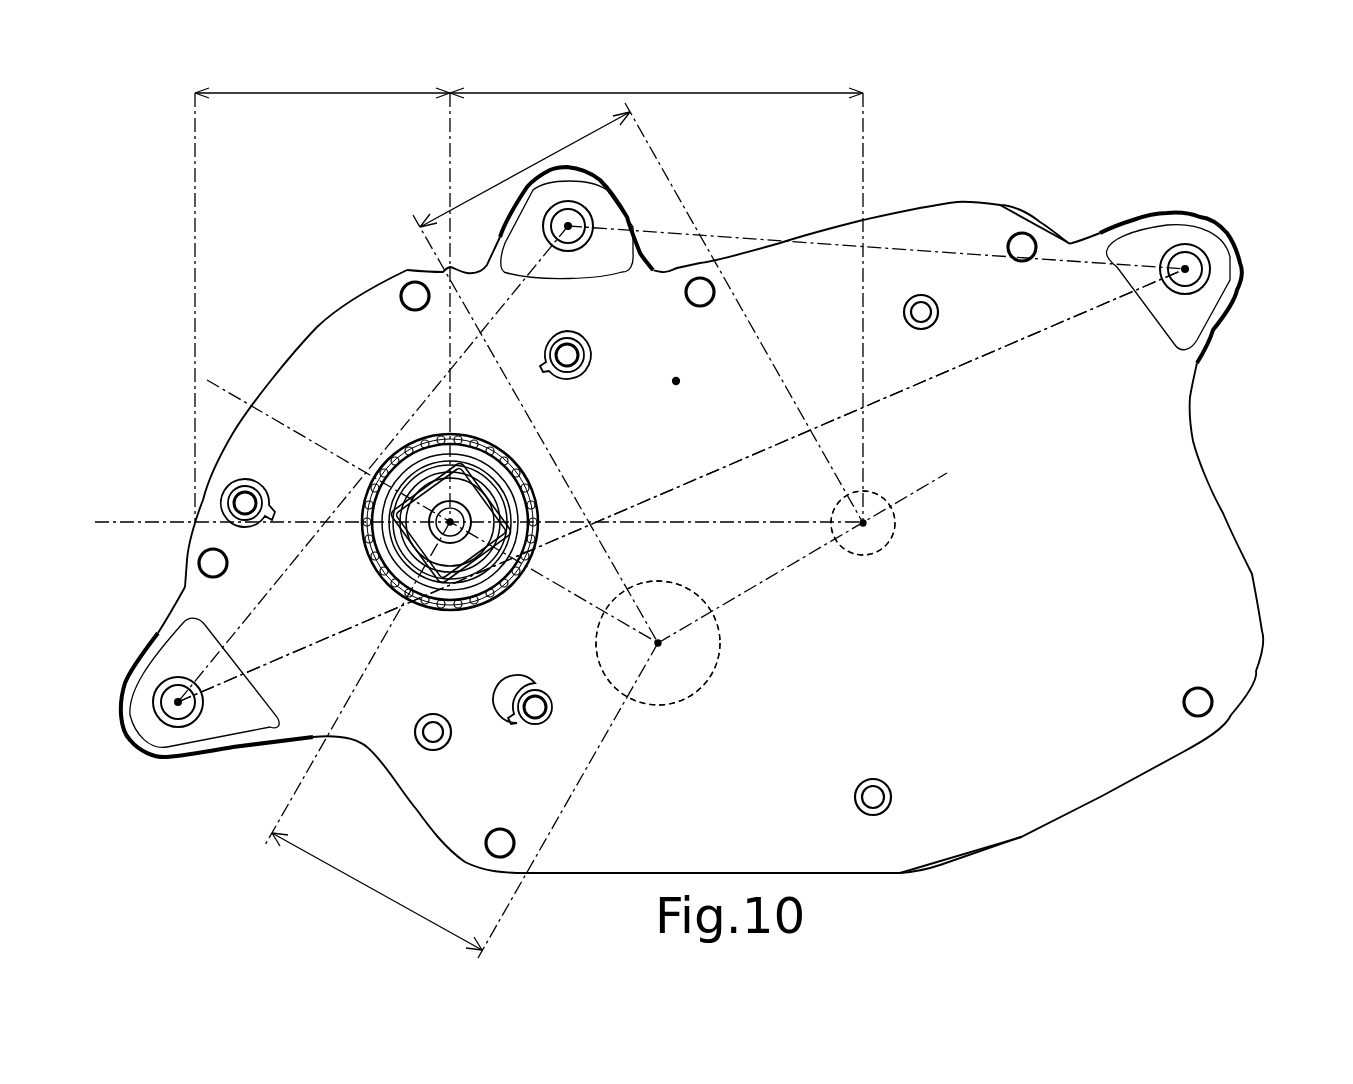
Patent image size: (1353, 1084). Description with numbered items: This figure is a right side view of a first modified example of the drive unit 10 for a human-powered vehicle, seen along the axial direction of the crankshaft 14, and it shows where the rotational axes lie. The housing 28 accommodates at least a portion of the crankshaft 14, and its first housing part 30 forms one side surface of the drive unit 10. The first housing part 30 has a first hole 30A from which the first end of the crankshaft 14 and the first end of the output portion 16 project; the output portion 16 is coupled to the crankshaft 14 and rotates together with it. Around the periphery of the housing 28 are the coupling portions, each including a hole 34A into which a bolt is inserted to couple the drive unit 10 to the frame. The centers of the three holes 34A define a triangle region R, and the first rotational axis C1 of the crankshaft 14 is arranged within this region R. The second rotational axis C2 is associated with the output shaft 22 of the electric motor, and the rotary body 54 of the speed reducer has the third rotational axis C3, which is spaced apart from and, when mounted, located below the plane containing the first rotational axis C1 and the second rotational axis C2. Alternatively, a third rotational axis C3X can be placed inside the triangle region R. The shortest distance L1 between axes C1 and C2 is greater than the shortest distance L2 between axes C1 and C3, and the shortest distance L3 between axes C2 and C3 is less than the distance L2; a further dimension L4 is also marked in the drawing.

The drive unit 10 is at (1066, 150).
The crankshaft 14 is at (478, 456).
The output portion 16 is at (397, 445).
The output shaft 22 is at (893, 535).
The housing 28 is at (985, 850).
The first housing part 30 is at (1045, 805).
The first hole 30A is at (370, 560).
The hole 34A is at (572, 213).
The rotary body 54 is at (657, 706).
The first rotational axis C1 is at (450, 522).
The second rotational axis C2 is at (863, 523).
The third rotational axis C3 is at (658, 643).
The third rotational axis C3X is at (678, 384).
The triangle region R is at (987, 355).
The shortest distance L1 is at (650, 92).
The shortest distance L2 is at (358, 880).
The shortest distance L3 is at (523, 168).
The distance L4 is at (327, 92).